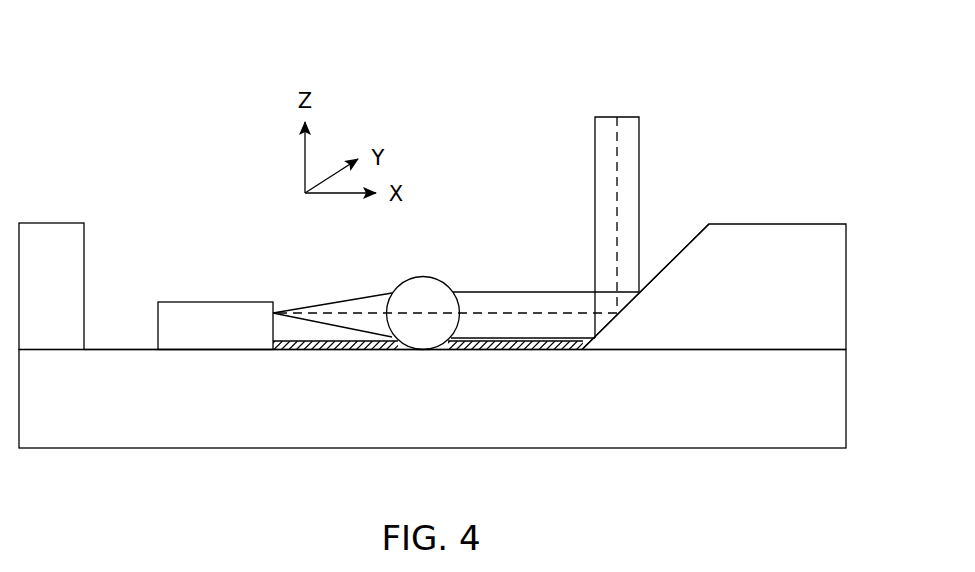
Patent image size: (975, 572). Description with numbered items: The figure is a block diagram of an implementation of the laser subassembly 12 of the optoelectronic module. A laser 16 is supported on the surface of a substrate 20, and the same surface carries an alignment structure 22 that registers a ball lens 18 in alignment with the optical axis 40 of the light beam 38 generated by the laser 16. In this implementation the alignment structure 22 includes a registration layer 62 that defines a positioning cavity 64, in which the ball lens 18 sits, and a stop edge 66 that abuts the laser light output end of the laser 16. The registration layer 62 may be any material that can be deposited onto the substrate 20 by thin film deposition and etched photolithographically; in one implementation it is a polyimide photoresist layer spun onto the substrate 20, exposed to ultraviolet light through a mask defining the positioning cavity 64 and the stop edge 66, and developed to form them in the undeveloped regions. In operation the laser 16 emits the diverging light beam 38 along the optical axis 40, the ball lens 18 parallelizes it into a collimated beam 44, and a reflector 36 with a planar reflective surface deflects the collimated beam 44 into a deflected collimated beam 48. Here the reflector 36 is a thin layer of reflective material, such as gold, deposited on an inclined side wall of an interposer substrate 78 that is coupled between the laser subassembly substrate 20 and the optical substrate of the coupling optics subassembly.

The laser subassembly 12 is at (137, 92).
The laser 16 is at (217, 302).
The ball lens 18 is at (423, 276).
The substrate 20 is at (847, 377).
The alignment structure 22 is at (489, 389).
The reflector 36 is at (679, 255).
The light beam 38 is at (383, 293).
The optical axis 40 is at (333, 313).
The collimated beam 44 is at (550, 292).
The deflected collimated beam 48 is at (593, 200).
The registration layer 62 is at (552, 355).
The positioning cavity 64 is at (405, 353).
The stop edge 66 is at (269, 344).
The interposer substrate 78 is at (847, 268).